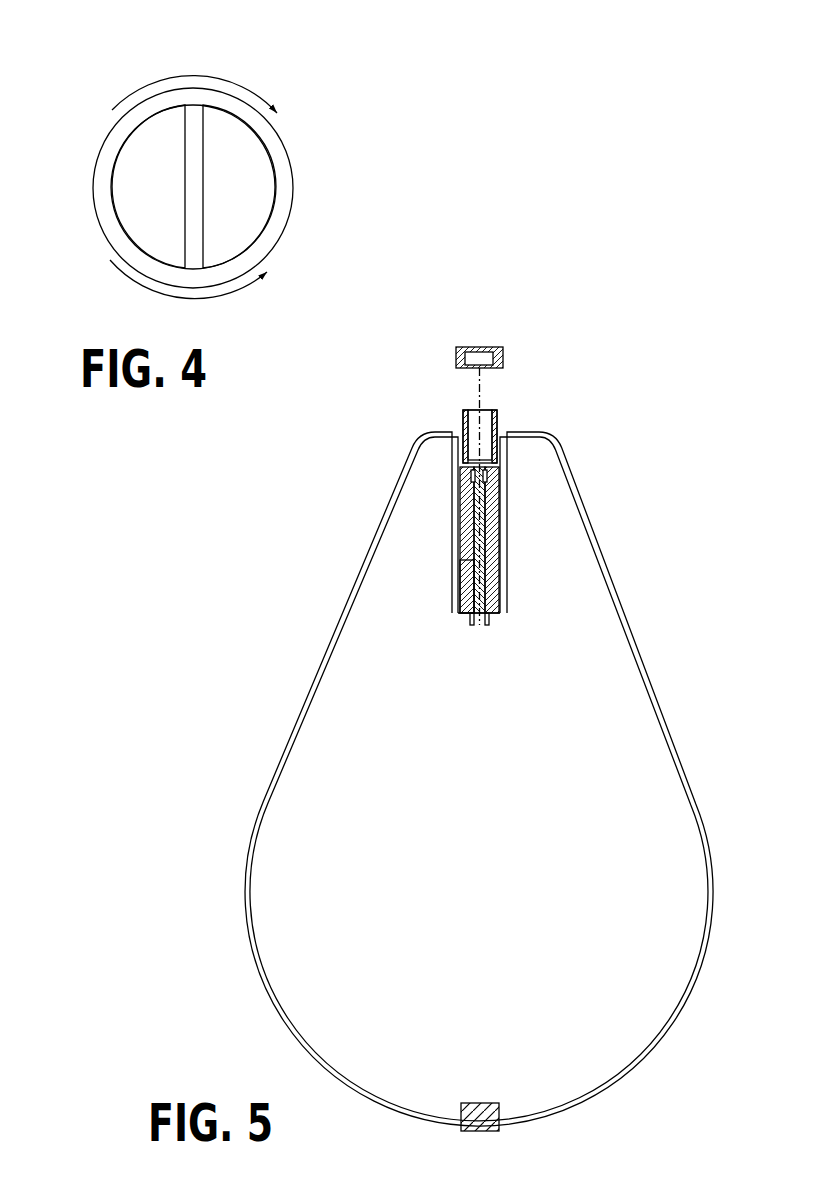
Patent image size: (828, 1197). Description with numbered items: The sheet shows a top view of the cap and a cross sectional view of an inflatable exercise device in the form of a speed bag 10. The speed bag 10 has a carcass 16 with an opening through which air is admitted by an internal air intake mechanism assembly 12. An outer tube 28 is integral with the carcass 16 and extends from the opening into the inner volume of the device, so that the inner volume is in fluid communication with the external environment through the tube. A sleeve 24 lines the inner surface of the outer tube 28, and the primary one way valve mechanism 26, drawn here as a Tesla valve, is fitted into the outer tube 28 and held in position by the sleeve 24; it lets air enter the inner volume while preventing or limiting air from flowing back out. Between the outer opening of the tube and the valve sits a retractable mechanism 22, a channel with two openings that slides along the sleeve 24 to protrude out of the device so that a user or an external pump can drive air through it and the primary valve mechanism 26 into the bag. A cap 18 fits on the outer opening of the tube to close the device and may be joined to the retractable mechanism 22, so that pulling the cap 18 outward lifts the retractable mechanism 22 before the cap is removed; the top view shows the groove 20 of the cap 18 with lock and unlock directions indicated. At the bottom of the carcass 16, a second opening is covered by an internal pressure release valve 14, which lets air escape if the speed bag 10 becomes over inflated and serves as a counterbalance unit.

In FIG. 4, the speed bag 10 is at (307, 32).
In FIG. 5, the speed bag 10 is at (662, 496).
In FIG. 5, the internal mechanism assembly 12 is at (492, 518).
In FIG. 5, the internal pressure release valve 14 is at (480, 1103).
In FIG. 5, the speed bag carcass 16 is at (275, 781).
In FIG. 4, the cap 18 is at (282, 172).
In FIG. 5, the cap 18 is at (475, 347).
In FIG. 4, the groove of cap 20 is at (140, 162).
In FIG. 5, the retractable mechanism 22 is at (498, 430).
In FIG. 5, the sleeve 24 is at (456, 492).
In FIG. 5, the primary one way valve mechanism 26 is at (495, 540).
In FIG. 5, the outer tube 28 is at (455, 573).